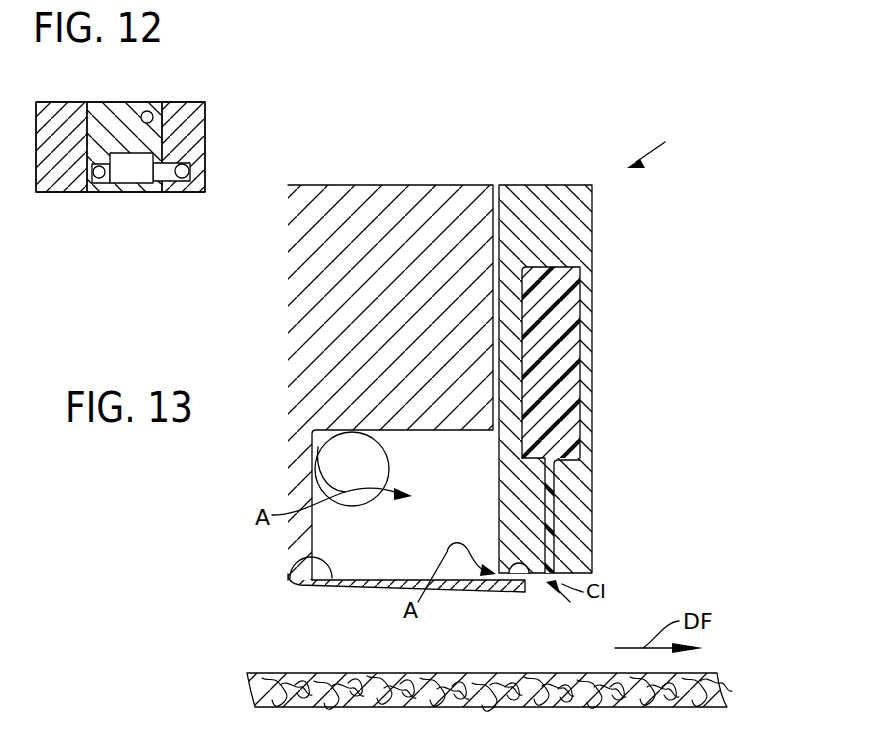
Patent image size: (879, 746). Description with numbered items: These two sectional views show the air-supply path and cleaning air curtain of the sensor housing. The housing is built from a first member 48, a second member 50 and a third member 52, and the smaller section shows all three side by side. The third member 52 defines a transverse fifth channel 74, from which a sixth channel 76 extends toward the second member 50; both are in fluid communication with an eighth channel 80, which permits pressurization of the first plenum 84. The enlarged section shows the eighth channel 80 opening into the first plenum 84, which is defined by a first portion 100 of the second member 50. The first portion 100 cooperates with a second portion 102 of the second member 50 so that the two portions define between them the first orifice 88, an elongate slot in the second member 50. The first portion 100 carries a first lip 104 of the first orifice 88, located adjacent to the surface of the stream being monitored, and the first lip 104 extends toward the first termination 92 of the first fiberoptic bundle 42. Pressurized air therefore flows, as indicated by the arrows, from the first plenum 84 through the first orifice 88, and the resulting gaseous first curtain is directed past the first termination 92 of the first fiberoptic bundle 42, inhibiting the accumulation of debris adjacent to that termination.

In FIG. 12, the first member 48 is at (70, 112).
In FIG. 12, the second member 50 is at (120, 110).
In FIG. 13, the second member 50 is at (661, 147).
In FIG. 12, the third member 52 is at (188, 110).
In FIG. 12, the fifth channel 74 is at (197, 163).
In FIG. 12, the sixth channel 76 is at (172, 190).
In FIG. 12, the eighth channel 80 is at (153, 190).
In FIG. 13, the eighth channel 80 is at (314, 462).
In FIG. 12, the first plenum 84 is at (113, 191).
In FIG. 13, the first plenum 84 is at (288, 553).
In FIG. 13, the first portion 100 is at (357, 198).
In FIG. 13, the second portion 102 is at (527, 193).
In FIG. 13, the first fiberoptic bundle 42 is at (565, 357).
In FIG. 13, the first termination 92 is at (553, 566).
In FIG. 13, the first orifice 88 is at (527, 578).
In FIG. 13, the first lip 104 is at (480, 588).